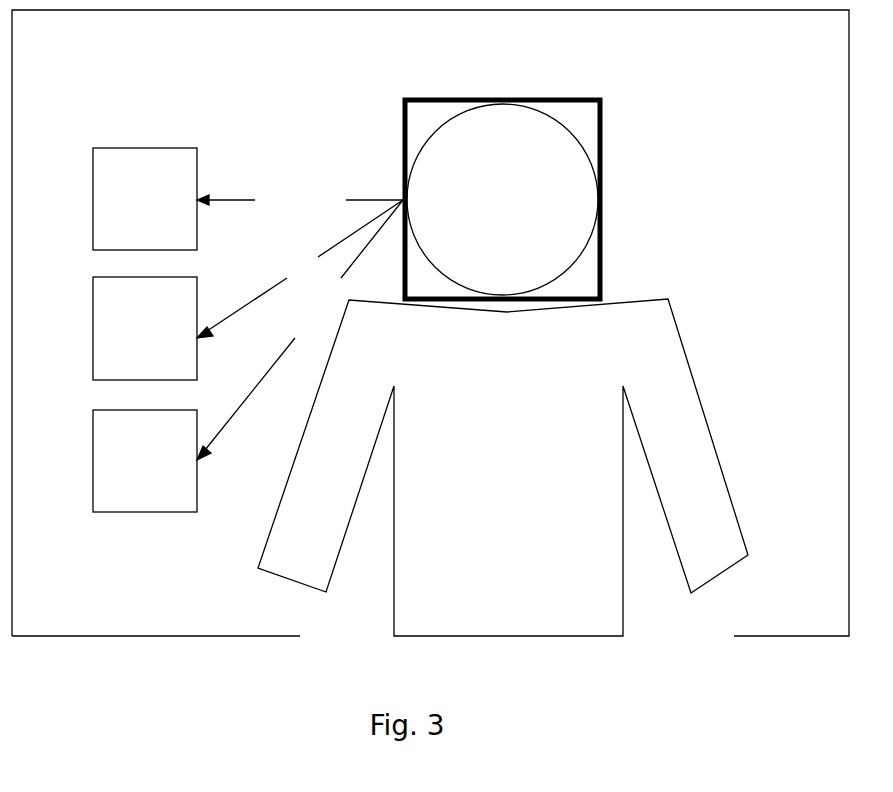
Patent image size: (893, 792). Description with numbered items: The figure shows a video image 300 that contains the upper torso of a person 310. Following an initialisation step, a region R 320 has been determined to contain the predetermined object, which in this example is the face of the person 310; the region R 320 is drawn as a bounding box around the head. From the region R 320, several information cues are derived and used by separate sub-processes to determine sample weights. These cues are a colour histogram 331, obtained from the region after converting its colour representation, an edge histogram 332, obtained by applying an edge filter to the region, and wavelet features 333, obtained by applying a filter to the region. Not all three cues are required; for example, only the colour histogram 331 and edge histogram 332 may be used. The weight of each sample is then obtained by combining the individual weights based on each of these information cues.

The video image 300 is at (430, 323).
The person 310 is at (503, 467).
The region R 320 is at (502, 188).
The colour histogram 331 is at (248, 199).
The edge histogram 332 is at (248, 290).
The wavelet features 333 is at (248, 356).